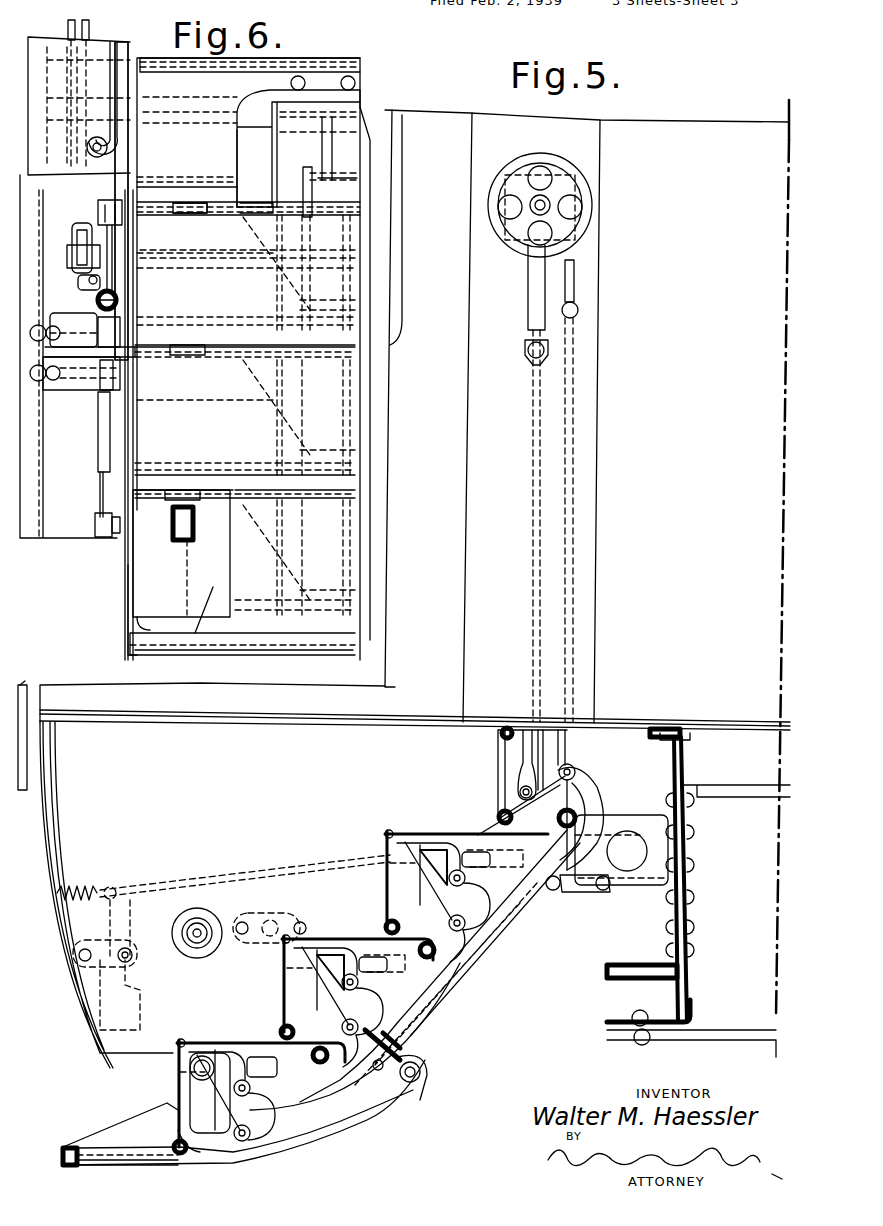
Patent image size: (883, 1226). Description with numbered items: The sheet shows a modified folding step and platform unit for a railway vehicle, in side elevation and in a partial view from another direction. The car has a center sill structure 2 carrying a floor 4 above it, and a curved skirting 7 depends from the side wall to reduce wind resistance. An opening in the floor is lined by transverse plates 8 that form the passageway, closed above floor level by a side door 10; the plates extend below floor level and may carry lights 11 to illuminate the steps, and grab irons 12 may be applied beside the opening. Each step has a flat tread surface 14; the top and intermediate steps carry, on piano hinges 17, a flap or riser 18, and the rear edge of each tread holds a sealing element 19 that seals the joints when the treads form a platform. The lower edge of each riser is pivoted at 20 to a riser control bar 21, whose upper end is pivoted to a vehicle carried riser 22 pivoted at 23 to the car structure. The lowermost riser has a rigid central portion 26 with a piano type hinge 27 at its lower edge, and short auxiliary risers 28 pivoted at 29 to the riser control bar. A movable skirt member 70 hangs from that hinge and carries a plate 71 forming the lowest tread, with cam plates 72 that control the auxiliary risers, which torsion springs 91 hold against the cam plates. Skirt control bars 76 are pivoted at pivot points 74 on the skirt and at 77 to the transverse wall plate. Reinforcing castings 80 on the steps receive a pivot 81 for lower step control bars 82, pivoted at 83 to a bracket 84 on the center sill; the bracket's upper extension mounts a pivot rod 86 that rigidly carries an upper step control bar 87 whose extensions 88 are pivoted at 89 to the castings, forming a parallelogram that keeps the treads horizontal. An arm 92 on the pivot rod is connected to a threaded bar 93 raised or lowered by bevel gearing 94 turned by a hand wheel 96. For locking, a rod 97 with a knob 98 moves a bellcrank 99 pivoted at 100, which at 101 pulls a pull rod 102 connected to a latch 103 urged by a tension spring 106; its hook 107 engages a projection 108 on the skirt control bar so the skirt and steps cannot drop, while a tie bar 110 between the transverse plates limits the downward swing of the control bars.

In FIG. 5, the center sill structure 2 is at (688, 880).
In FIG. 5, the floor 4 is at (735, 722).
In FIG. 5, the curved skirting 7 is at (52, 985).
In FIG. 5, the transverse plates 8 is at (220, 799).
In FIG. 5, the side door 10 is at (492, 416).
In FIG. 5, the lights 11 is at (200, 925).
In FIG. 6, the grab irons 12 is at (123, 188).
In FIG. 5, the grab irons 12 is at (28, 723).
In FIG. 6, the tread surface 14 is at (230, 205).
In FIG. 5, the tread surface 14 is at (418, 832).
In FIG. 6, the hinge 17 is at (205, 213).
In FIG. 5, the hinge 17 is at (389, 832).
In FIG. 6, the flap or riser 18 is at (246, 341).
In FIG. 5, the flap or riser 18 is at (390, 880).
In FIG. 5, the sealing element 19 is at (383, 1005).
In FIG. 6, the pivot 20 is at (213, 176).
In FIG. 5, the pivot 20 is at (272, 1028).
In FIG. 5, the riser control bar 21 is at (485, 828).
In FIG. 6, the vehicle carried riser 22 is at (190, 127).
In FIG. 5, the vehicle carried riser 22 is at (497, 785).
In FIG. 6, the pivot 23 is at (320, 60).
In FIG. 5, the pivot 23 is at (507, 727).
In FIG. 6, the central portion of lowermost riser 26 is at (295, 612).
In FIG. 6, the piano type hinge 27 is at (345, 637).
In FIG. 5, the piano type hinge 27 is at (173, 1152).
In FIG. 6, the auxiliary risers 28 is at (181, 553).
In FIG. 6, the pivot 29 is at (150, 614).
In FIG. 5, the pivot 29 is at (183, 1135).
In FIG. 6, the movable skirt member 70 is at (305, 658).
In FIG. 5, the movable skirt member 70 is at (327, 1143).
In FIG. 6, the plate 71 is at (208, 608).
In FIG. 5, the plate 71 is at (135, 1152).
In FIG. 6, the cam plates 72 is at (128, 578).
In FIG. 5, the cam plates 72 is at (140, 1120).
In FIG. 6, the pivot points 74 is at (95, 522).
In FIG. 5, the pivot points 74 is at (427, 1072).
In FIG. 6, the skirt control bars 76 is at (100, 497).
In FIG. 5, the skirt control bars 76 is at (405, 1052).
In FIG. 6, the pivot 77 is at (97, 338).
In FIG. 5, the pivot 77 is at (270, 936).
In FIG. 6, the reinforcing castings 80 is at (350, 235).
In FIG. 5, the reinforcing castings 80 is at (425, 842).
In FIG. 6, the pivot 81 is at (350, 302).
In FIG. 5, the pivot 81 is at (449, 923).
In FIG. 6, the lower step control bars 82 is at (303, 185).
In FIG. 5, the lower step control bars 82 is at (300, 1105).
In FIG. 6, the pivot 83 is at (350, 183).
In FIG. 5, the pivot 83 is at (558, 818).
In FIG. 6, the bracket 84 is at (340, 150).
In FIG. 5, the bracket 84 is at (642, 805).
In FIG. 6, the pivot rod 86 is at (257, 120).
In FIG. 5, the pivot rod 86 is at (575, 777).
In FIG. 6, the upper step control bar 87 is at (270, 172).
In FIG. 5, the upper step control bar 87 is at (455, 950).
In FIG. 5, the extensions 88 is at (477, 877).
In FIG. 6, the pivot 89 is at (282, 277).
In FIG. 5, the pivot 89 is at (428, 880).
In FIG. 6, the torsion springs 91 is at (175, 545).
In FIG. 5, the torsion springs 91 is at (202, 1055).
In FIG. 6, the arm 92 is at (72, 160).
In FIG. 5, the arm 92 is at (540, 730).
In FIG. 6, the bar 93 is at (68, 29).
In FIG. 5, the bar 93 is at (530, 538).
In FIG. 5, the bevel gearing 94 is at (560, 226).
In FIG. 5, the hand wheel 96 is at (548, 168).
In FIG. 6, the rod 97 is at (98, 211).
In FIG. 5, the rod 97 is at (575, 538).
In FIG. 5, the knob 98 is at (578, 310).
In FIG. 6, the bellcrank 99 is at (72, 248).
In FIG. 5, the bellcrank 99 is at (558, 888).
In FIG. 6, the pivot 100 is at (235, 265).
In FIG. 5, the pivot 100 is at (607, 892).
In FIG. 5, the pivot 101 is at (607, 855).
In FIG. 5, the pull rod 102 is at (298, 878).
In FIG. 6, the latch 103 is at (120, 333).
In FIG. 5, the latch 103 is at (110, 928).
In FIG. 6, the tension spring 106 is at (98, 300).
In FIG. 5, the tension spring 106 is at (80, 887).
In FIG. 6, the hook 107 is at (108, 458).
In FIG. 5, the hook 107 is at (135, 1030).
In FIG. 5, the projection 108 is at (376, 1081).
In FIG. 5, the tie bar 110 is at (410, 1031).